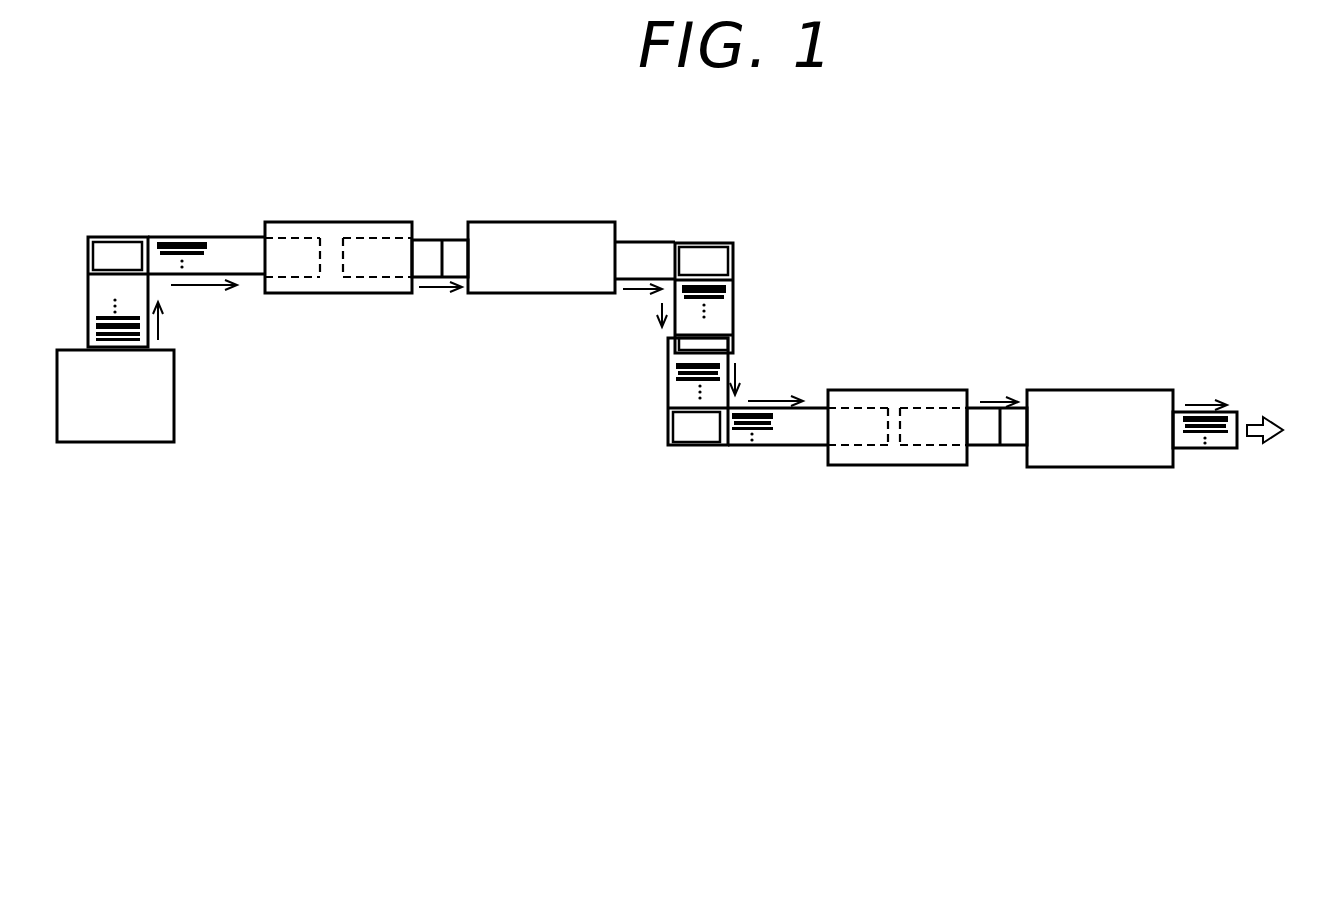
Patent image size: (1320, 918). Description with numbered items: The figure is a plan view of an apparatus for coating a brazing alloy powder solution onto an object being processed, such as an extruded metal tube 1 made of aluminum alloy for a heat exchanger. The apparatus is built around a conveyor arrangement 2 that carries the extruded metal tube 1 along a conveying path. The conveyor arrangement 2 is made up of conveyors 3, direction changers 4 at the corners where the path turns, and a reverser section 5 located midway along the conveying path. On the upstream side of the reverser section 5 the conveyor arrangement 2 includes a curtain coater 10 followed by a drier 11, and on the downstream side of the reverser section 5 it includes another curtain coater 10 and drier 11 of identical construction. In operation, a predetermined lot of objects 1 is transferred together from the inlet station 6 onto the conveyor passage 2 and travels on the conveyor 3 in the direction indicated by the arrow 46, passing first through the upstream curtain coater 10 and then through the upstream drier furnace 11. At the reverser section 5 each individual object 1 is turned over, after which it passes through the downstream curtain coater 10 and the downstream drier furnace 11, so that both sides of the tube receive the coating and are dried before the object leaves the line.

The extruded metal tube 1 is at (178, 242).
The conveyor arrangement 2 is at (661, 233).
The conveyor 3 is at (228, 247).
The direction changer 4 is at (115, 242).
The reverser section 5 is at (655, 352).
The inlet station 6 is at (108, 449).
The curtain coater 10 is at (345, 228).
The drier 11 is at (560, 228).
The arrow 46 is at (200, 287).